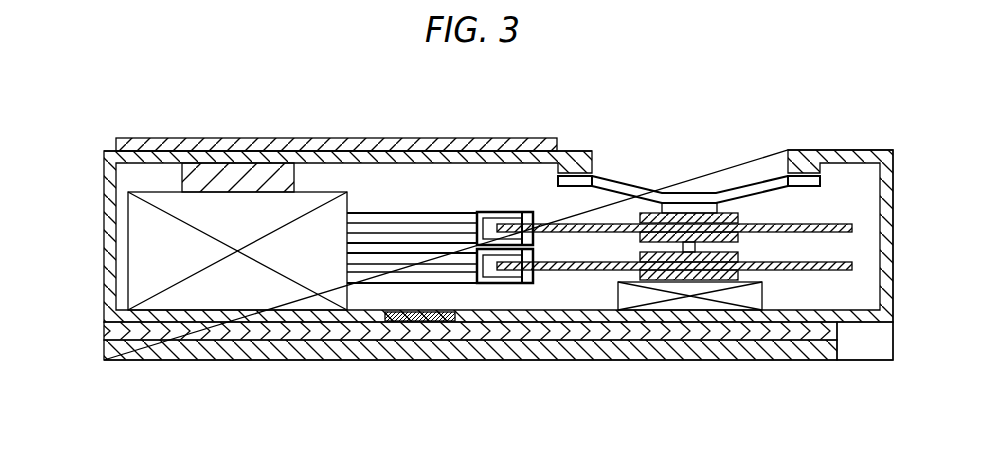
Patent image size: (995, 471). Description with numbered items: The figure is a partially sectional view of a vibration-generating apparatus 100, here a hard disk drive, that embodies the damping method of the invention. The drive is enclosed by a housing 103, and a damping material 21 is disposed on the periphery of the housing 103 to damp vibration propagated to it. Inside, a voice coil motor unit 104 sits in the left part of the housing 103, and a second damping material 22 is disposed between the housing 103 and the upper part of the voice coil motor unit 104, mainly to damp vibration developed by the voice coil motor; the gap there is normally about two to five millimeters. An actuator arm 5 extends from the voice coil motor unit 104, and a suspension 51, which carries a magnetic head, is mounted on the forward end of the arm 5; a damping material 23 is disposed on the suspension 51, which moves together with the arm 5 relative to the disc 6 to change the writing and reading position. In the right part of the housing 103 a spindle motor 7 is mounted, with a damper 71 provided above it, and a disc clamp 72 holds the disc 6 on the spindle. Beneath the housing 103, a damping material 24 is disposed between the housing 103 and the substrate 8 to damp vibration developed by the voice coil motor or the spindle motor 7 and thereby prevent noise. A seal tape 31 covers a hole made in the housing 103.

The vibration-generating apparatus 100 is at (98, 123).
The housing 103 is at (108, 184).
The voice coil motor unit 104 is at (128, 246).
The damping material 21 is at (203, 139).
The damping material 22 is at (257, 168).
The damping material 24 is at (108, 327).
The substrate 8 is at (108, 350).
The seal tape 31 is at (419, 323).
The actuator arm 5 is at (387, 229).
The damping material 23 is at (488, 240).
The suspension 51 is at (521, 216).
The disc 6 is at (600, 232).
The damper 71 is at (790, 167).
The disc clamp 72 is at (742, 258).
The spindle motor 7 is at (764, 293).